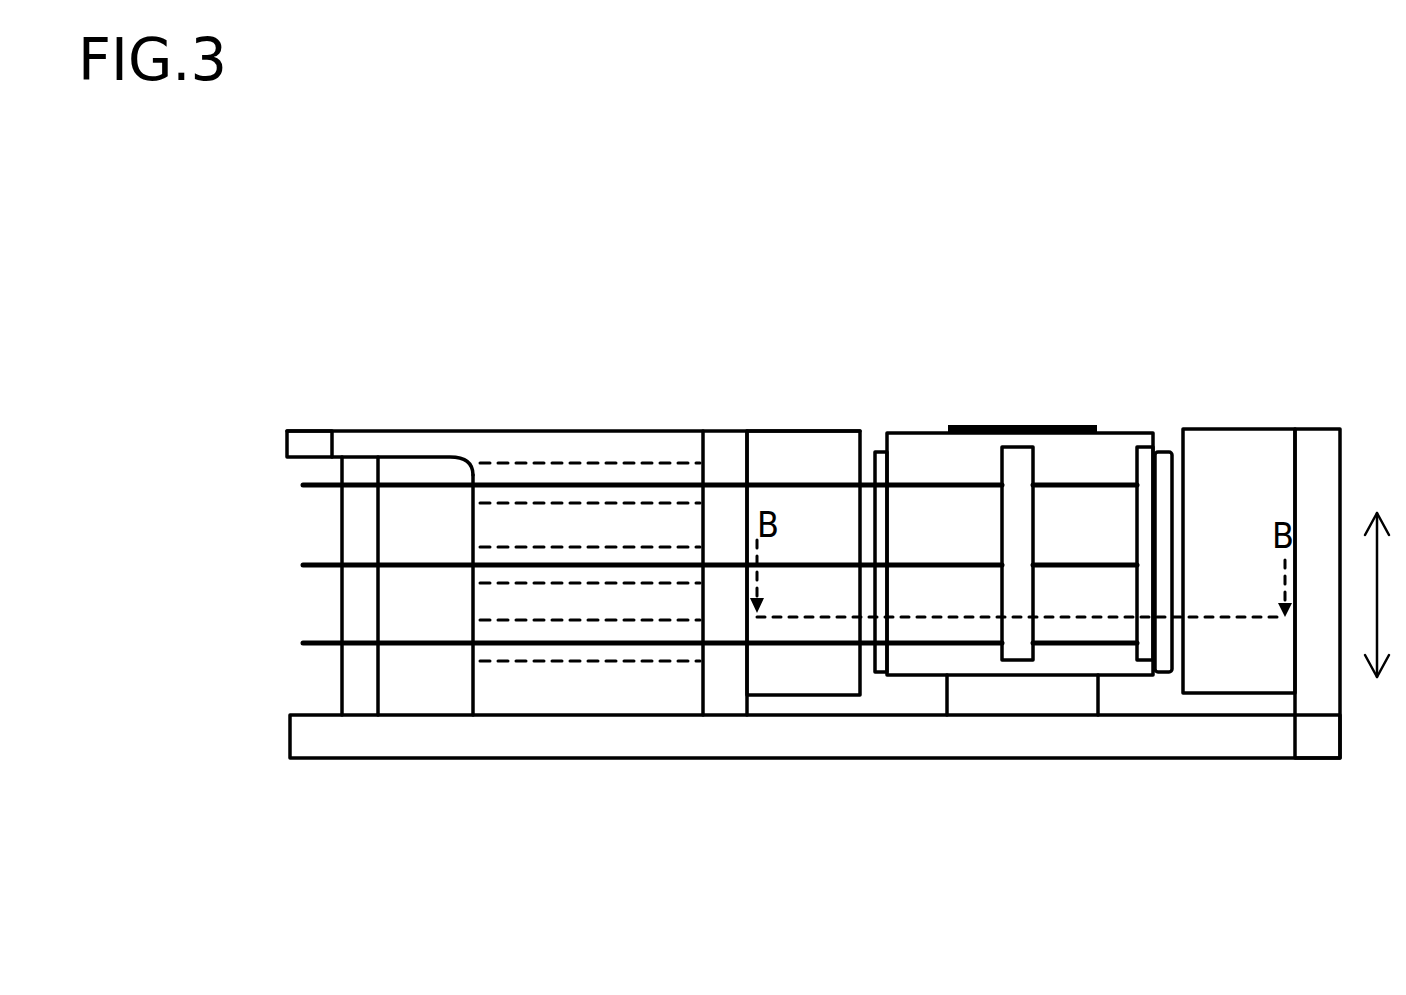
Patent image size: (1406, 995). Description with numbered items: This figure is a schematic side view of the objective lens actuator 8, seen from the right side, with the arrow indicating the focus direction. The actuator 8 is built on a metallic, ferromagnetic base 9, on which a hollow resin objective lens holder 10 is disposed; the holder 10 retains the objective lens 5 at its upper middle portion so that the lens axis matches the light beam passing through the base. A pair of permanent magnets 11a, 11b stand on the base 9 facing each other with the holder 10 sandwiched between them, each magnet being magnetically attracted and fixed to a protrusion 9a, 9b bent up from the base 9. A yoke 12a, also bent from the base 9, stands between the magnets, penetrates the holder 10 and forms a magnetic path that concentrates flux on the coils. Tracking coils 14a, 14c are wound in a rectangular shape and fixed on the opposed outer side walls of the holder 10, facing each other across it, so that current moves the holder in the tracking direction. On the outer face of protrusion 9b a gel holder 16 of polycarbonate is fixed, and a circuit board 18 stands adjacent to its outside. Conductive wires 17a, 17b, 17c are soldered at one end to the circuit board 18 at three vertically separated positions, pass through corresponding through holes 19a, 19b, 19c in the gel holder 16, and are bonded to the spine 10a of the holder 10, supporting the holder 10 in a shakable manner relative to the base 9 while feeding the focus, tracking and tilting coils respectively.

The objective lens actuator 8 is at (355, 368).
The base 9 is at (792, 740).
The protrusion 9a is at (1332, 433).
The protrusion 9b is at (735, 433).
The objective lens holder 10 is at (910, 655).
The spine 10a is at (1023, 650).
The permanent magnet 11a is at (1210, 437).
The permanent magnet 11b is at (840, 443).
The yoke 12a is at (1078, 698).
The tracking coil 14a is at (1165, 455).
The tracking coil 14c is at (887, 453).
The gel holder 16 is at (512, 445).
The conductive wire 17a is at (335, 488).
The conductive wire 17b is at (335, 566).
The conductive wire 17c is at (335, 645).
The circuit board 18 is at (340, 700).
The through hole 19a is at (642, 467).
The through hole 19b is at (582, 585).
The through hole 19c is at (500, 668).
The objective lens 5 is at (1032, 425).